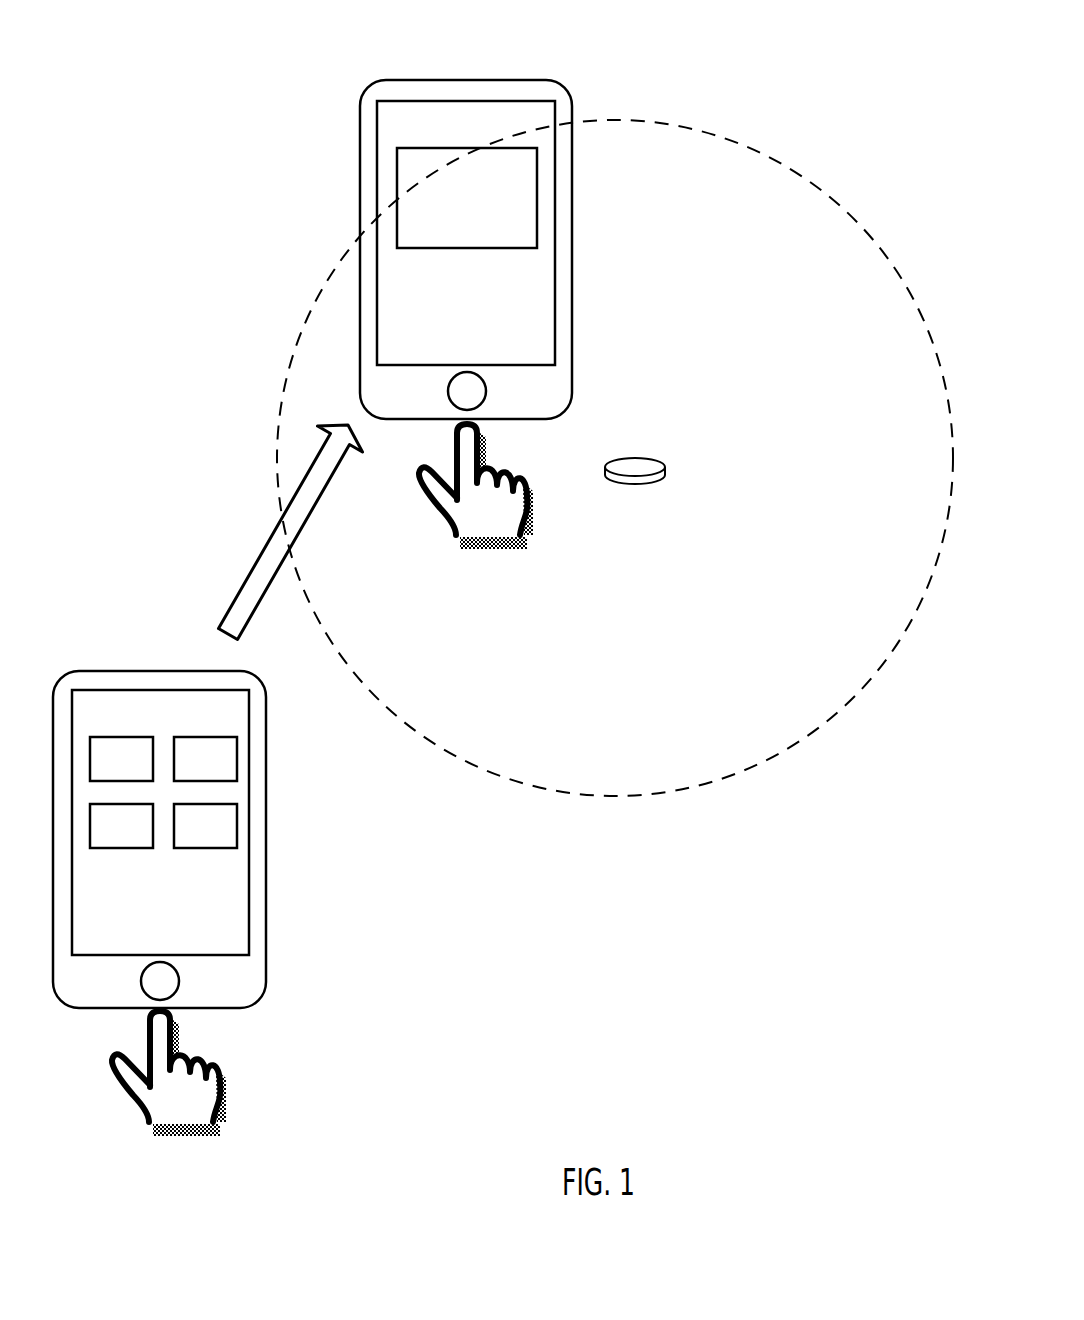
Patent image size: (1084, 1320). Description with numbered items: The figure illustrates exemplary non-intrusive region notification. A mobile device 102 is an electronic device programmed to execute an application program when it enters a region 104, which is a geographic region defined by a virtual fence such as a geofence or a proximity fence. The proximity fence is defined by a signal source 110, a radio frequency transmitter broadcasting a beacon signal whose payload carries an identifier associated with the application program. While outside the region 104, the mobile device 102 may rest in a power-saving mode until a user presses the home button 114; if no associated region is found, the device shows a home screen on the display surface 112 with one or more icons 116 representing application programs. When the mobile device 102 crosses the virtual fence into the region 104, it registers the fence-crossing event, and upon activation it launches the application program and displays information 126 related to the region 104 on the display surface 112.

The mobile device 102 is at (267, 844).
The region 104 is at (587, 793).
The signal source 110 is at (660, 471).
The display surface 112 is at (468, 100).
The home button 114 is at (486, 390).
The icons 116 is at (120, 736).
The information 126 is at (397, 197).